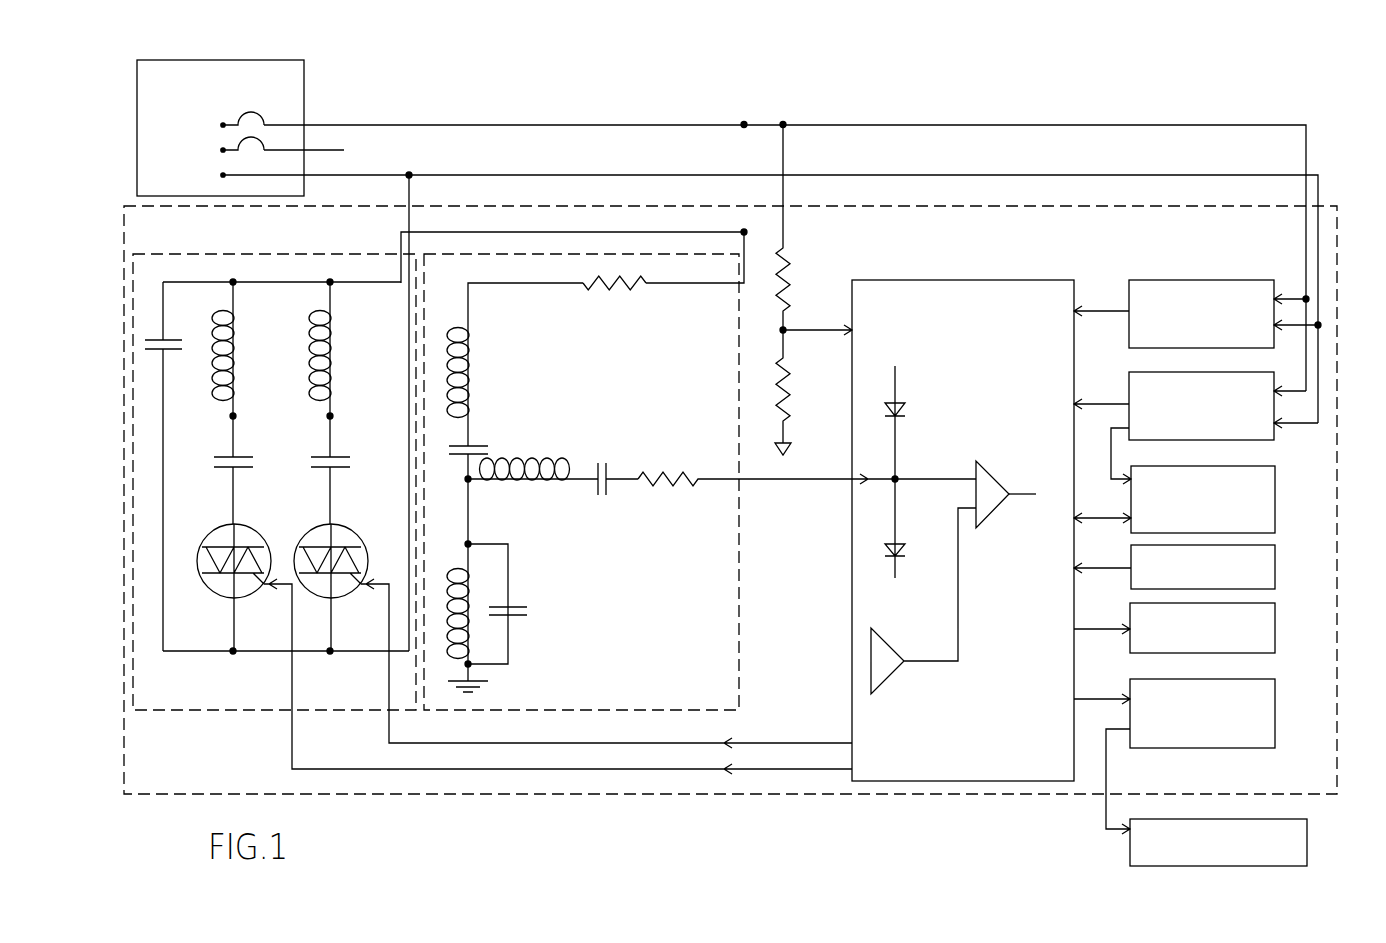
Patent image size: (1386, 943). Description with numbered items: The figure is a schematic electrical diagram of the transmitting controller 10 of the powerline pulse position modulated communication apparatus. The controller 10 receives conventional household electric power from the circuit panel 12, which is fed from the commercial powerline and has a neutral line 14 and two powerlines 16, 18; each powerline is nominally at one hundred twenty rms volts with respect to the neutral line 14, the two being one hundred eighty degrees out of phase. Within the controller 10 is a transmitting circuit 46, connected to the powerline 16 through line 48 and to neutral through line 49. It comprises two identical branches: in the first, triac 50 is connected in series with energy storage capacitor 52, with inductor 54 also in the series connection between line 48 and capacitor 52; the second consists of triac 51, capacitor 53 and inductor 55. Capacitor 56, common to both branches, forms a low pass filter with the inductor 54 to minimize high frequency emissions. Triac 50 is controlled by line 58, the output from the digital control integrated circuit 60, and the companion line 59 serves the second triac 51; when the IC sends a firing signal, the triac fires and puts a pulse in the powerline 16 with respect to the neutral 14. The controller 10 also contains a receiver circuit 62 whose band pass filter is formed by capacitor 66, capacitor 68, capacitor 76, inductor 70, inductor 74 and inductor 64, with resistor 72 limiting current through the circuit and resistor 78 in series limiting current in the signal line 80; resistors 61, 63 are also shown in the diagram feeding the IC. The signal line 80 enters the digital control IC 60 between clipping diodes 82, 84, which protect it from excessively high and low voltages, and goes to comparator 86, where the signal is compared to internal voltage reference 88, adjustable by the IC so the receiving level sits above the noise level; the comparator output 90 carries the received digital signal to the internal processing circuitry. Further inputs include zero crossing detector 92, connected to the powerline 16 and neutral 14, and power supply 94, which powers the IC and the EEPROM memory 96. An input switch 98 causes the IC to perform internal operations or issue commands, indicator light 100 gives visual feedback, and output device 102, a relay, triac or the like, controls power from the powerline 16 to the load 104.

The transmitting controller 10 is at (420, 795).
The circuit panel 12 is at (295, 73).
The neutral line 14 is at (333, 174).
The powerline 16 is at (333, 124).
The powerline 18 is at (333, 148).
The transmitting circuit 46 is at (195, 711).
The line 48 is at (397, 246).
The line 49 is at (410, 200).
The triac 50 is at (351, 523).
The second triac 51 is at (253, 523).
The energy storage capacitor 52 is at (335, 455).
The capacitor 53 is at (238, 455).
The inductor 54 is at (330, 337).
The inductor 55 is at (233, 337).
The capacitor 56 is at (170, 334).
The line 58 is at (387, 723).
The transmit out #2 gate line 59 is at (289, 727).
The digital control integrated circuit 60 is at (963, 515).
The resistor 61 is at (783, 252).
The receiver circuit 62 is at (550, 711).
The resistor 63 is at (783, 362).
The inductor 64 is at (465, 338).
The capacitor 66 is at (475, 443).
The capacitor 68 is at (513, 615).
The inductor 70 is at (468, 630).
The resistor 72 is at (623, 292).
The inductor 74 is at (548, 453).
The capacitor 76 is at (607, 493).
The resistor 78 is at (665, 485).
The signal line 80 is at (748, 475).
The clipping diode 82 is at (900, 405).
The clipping diode 84 is at (897, 547).
The comparator 86 is at (993, 475).
The internal voltage reference 88 is at (897, 653).
The comparator output 90 is at (1015, 497).
The zero crossing detector 92 is at (1128, 335).
The power supply 94 is at (1128, 386).
The EEPROM memory 96 is at (1272, 524).
The input switch 98 is at (1272, 578).
The indicator light 100 is at (1274, 616).
The output device 102 is at (1276, 707).
The load 104 is at (1308, 845).